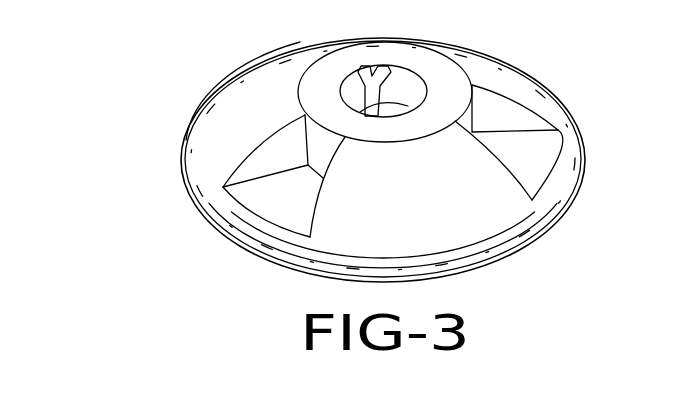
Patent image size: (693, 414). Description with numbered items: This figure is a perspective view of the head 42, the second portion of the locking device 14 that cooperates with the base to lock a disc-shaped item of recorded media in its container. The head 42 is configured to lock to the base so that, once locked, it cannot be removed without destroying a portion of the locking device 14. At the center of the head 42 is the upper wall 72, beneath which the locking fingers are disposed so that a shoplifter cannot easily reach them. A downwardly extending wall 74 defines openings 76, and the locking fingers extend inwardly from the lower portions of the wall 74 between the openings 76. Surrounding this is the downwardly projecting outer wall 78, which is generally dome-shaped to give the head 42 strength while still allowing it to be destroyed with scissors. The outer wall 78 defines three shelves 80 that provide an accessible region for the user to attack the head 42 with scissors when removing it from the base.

The locking device 14 is at (538, 78).
The head 42 is at (225, 103).
The upper wall 72 is at (318, 78).
The downwardly extending wall 74 is at (408, 87).
The openings 76 is at (370, 72).
The outer wall 78 is at (215, 132).
The shelves 80 is at (267, 190).